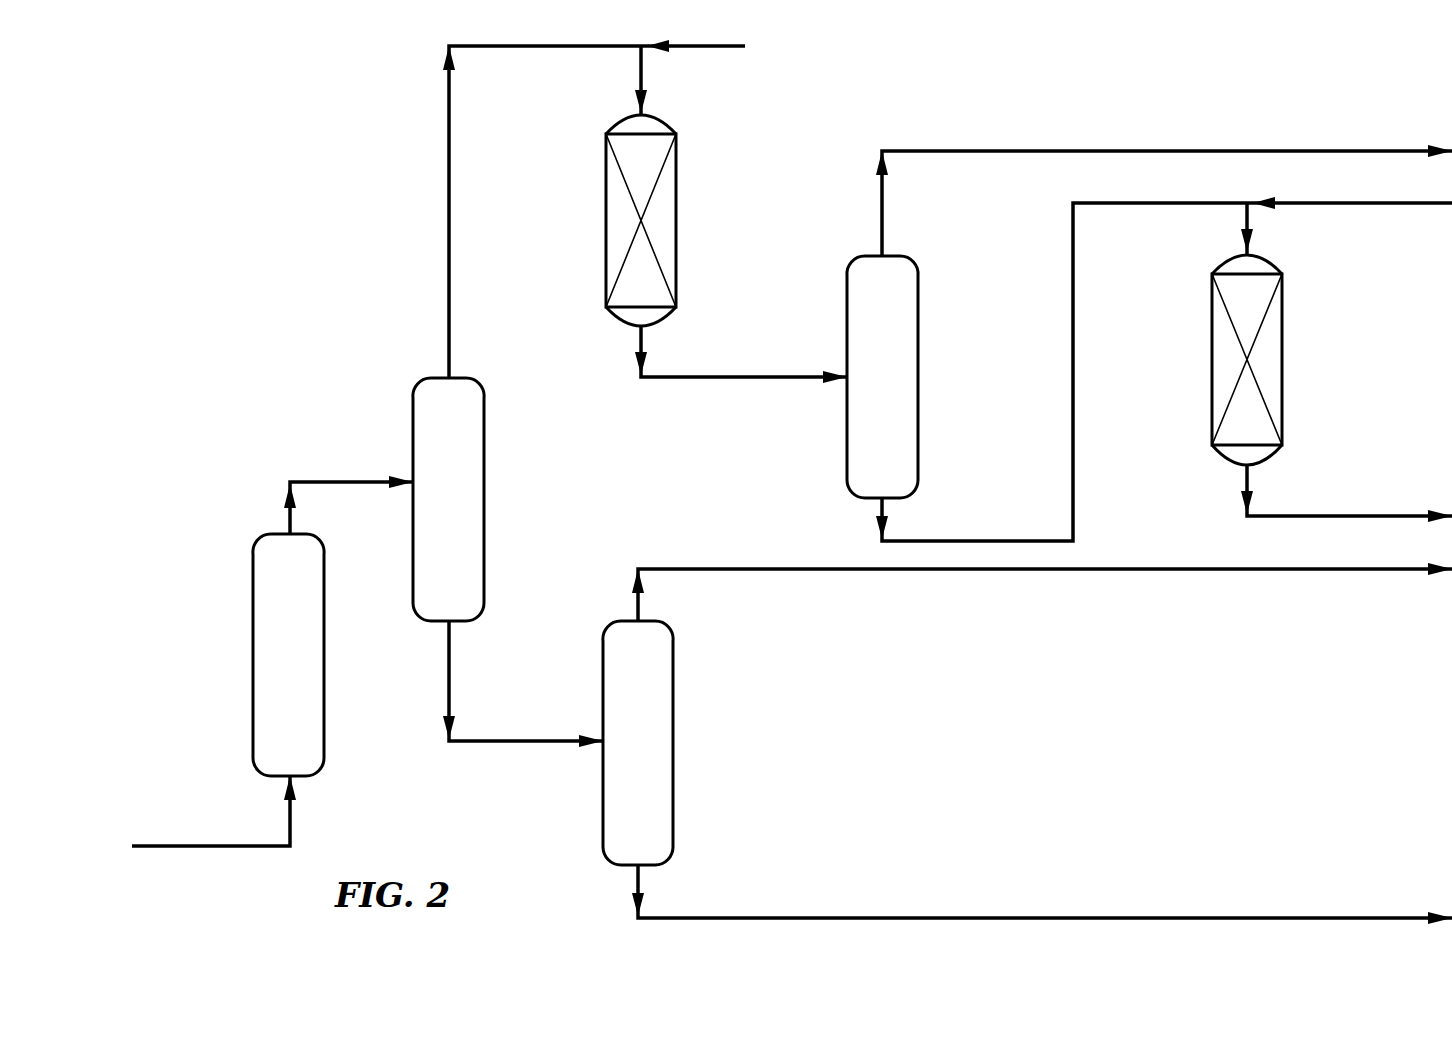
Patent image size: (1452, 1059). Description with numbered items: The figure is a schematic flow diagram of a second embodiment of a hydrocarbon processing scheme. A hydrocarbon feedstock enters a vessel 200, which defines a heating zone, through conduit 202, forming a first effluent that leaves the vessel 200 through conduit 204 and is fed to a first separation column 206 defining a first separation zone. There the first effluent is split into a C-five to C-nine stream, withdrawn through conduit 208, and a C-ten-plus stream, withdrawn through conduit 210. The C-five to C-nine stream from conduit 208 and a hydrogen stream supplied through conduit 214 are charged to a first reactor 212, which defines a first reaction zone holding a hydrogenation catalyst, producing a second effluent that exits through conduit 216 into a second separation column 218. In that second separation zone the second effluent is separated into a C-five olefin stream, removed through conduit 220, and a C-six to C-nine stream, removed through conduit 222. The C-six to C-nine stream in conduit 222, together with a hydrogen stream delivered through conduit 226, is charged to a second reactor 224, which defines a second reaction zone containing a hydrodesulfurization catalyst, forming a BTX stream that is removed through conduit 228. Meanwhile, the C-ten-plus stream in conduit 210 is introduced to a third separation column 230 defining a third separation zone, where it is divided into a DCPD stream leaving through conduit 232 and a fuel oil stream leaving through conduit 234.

The vessel 200 is at (254, 601).
The conduit 202 is at (200, 846).
The conduit 204 is at (342, 482).
The first separation column 206 is at (484, 413).
The conduit 208 is at (449, 240).
The conduit 210 is at (522, 741).
The first reactor 212 is at (606, 184).
The conduit 214 is at (704, 46).
The conduit 216 is at (745, 377).
The second separation column 218 is at (918, 302).
The conduit 220 is at (1068, 151).
The conduit 222 is at (986, 541).
The second reactor 224 is at (1282, 358).
The conduit 226 is at (1361, 203).
The conduit 228 is at (1356, 516).
The third separation column 230 is at (673, 723).
The conduit 232 is at (1084, 569).
The conduit 234 is at (1068, 918).